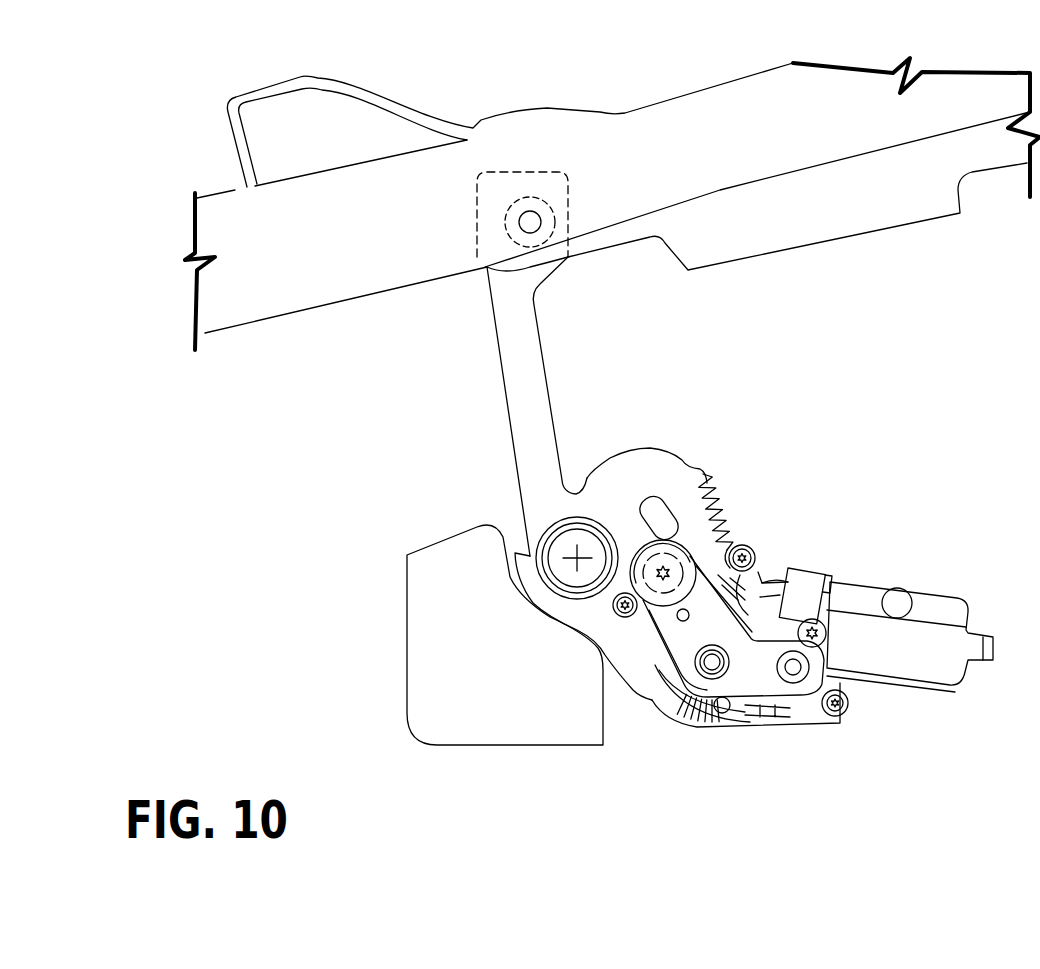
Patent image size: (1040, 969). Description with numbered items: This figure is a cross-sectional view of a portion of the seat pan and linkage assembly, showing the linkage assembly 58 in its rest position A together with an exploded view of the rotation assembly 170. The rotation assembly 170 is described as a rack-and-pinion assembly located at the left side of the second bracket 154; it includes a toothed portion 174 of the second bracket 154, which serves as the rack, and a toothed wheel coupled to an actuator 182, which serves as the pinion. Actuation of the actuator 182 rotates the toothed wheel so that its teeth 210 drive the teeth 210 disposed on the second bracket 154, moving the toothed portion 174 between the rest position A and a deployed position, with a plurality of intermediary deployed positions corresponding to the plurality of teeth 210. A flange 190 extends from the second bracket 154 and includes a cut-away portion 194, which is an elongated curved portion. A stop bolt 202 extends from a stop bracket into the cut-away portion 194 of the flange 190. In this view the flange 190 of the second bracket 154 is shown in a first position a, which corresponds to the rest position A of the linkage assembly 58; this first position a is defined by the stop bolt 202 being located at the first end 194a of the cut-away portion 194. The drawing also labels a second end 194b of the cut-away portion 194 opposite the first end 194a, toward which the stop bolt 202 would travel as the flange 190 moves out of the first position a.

The linkage assembly 58 is at (520, 406).
The second bracket 154 is at (525, 423).
The rest position A is at (500, 370).
The toothed portion 174 is at (718, 493).
The rotation assembly 170 is at (780, 487).
The cut-away portion 194 is at (682, 528).
The first end of the cut-away portion 194a is at (707, 560).
The second spring end 194b is at (650, 510).
The actuator 182 is at (923, 613).
The flange 190 is at (633, 650).
The stop bolt 202 is at (667, 587).
The teeth 210 is at (752, 585).
The first position a is at (777, 555).